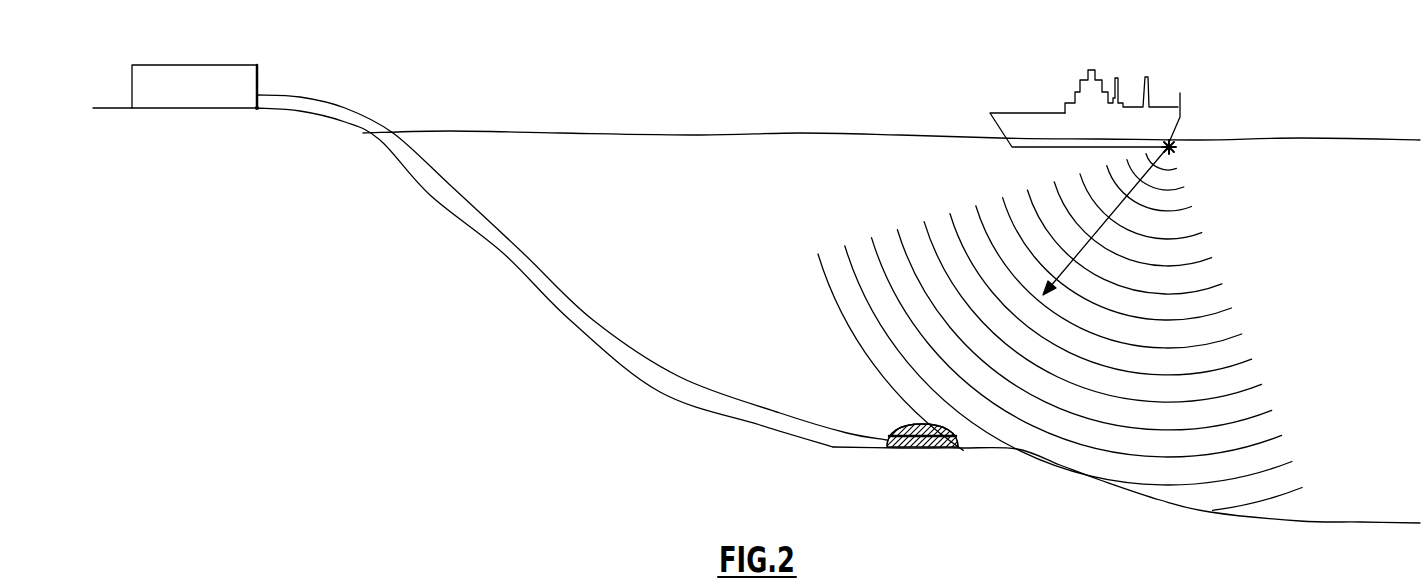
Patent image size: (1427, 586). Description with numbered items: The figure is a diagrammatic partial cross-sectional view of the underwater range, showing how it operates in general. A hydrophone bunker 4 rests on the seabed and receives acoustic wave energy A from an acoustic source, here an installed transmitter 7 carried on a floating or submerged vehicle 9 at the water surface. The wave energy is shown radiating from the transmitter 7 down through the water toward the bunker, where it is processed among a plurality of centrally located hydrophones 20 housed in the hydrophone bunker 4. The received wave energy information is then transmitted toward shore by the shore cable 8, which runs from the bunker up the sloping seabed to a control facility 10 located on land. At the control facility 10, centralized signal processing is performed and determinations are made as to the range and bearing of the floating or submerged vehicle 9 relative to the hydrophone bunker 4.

The control facility 10 is at (228, 64).
The shore cable 8 is at (522, 253).
The hydrophone bunker 4 is at (930, 448).
The hydrophones 20 is at (912, 424).
The floating or submerged vehicle 9 is at (1181, 120).
The transmitter 7 is at (1172, 149).
The acoustic wave energy A is at (1080, 283).